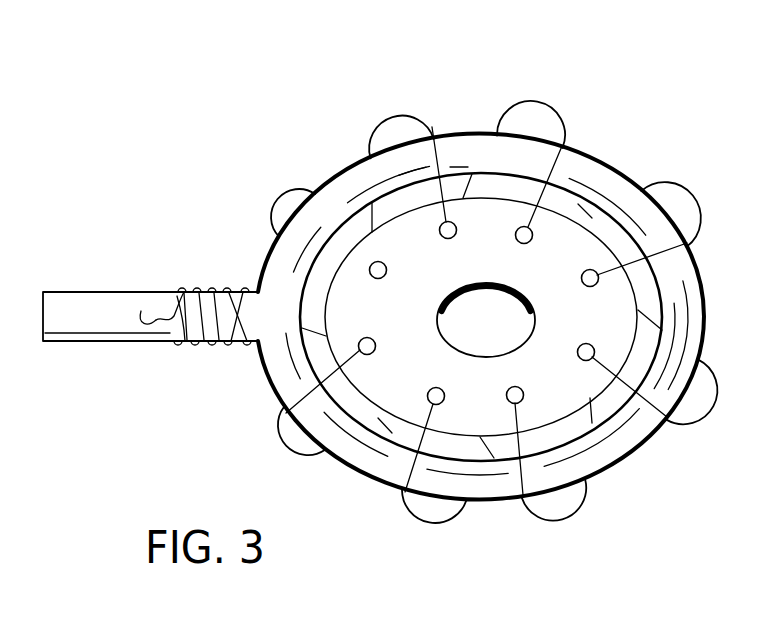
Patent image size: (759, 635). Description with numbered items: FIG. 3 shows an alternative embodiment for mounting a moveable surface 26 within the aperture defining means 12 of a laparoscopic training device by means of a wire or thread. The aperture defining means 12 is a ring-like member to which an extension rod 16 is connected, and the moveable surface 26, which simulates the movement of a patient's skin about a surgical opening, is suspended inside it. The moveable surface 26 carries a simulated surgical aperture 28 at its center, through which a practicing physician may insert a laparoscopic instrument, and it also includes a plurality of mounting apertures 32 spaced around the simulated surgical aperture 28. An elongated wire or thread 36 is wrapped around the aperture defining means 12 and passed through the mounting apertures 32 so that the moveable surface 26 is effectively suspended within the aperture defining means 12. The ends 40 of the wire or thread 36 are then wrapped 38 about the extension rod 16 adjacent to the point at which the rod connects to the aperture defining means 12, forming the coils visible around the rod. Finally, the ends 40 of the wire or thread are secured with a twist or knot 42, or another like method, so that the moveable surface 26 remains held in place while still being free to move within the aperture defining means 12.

The aperture defining means 12 is at (375, 262).
The extension rod 16 is at (107, 307).
The moveable surface 26 is at (494, 228).
The simulated surgical aperture 28 is at (508, 312).
The mounting apertures 32 is at (450, 222).
The wire or thread 36 is at (288, 202).
The wrapping 38 is at (231, 345).
The ends of the wire or thread 40 is at (145, 330).
The twist or knot 42 is at (162, 316).